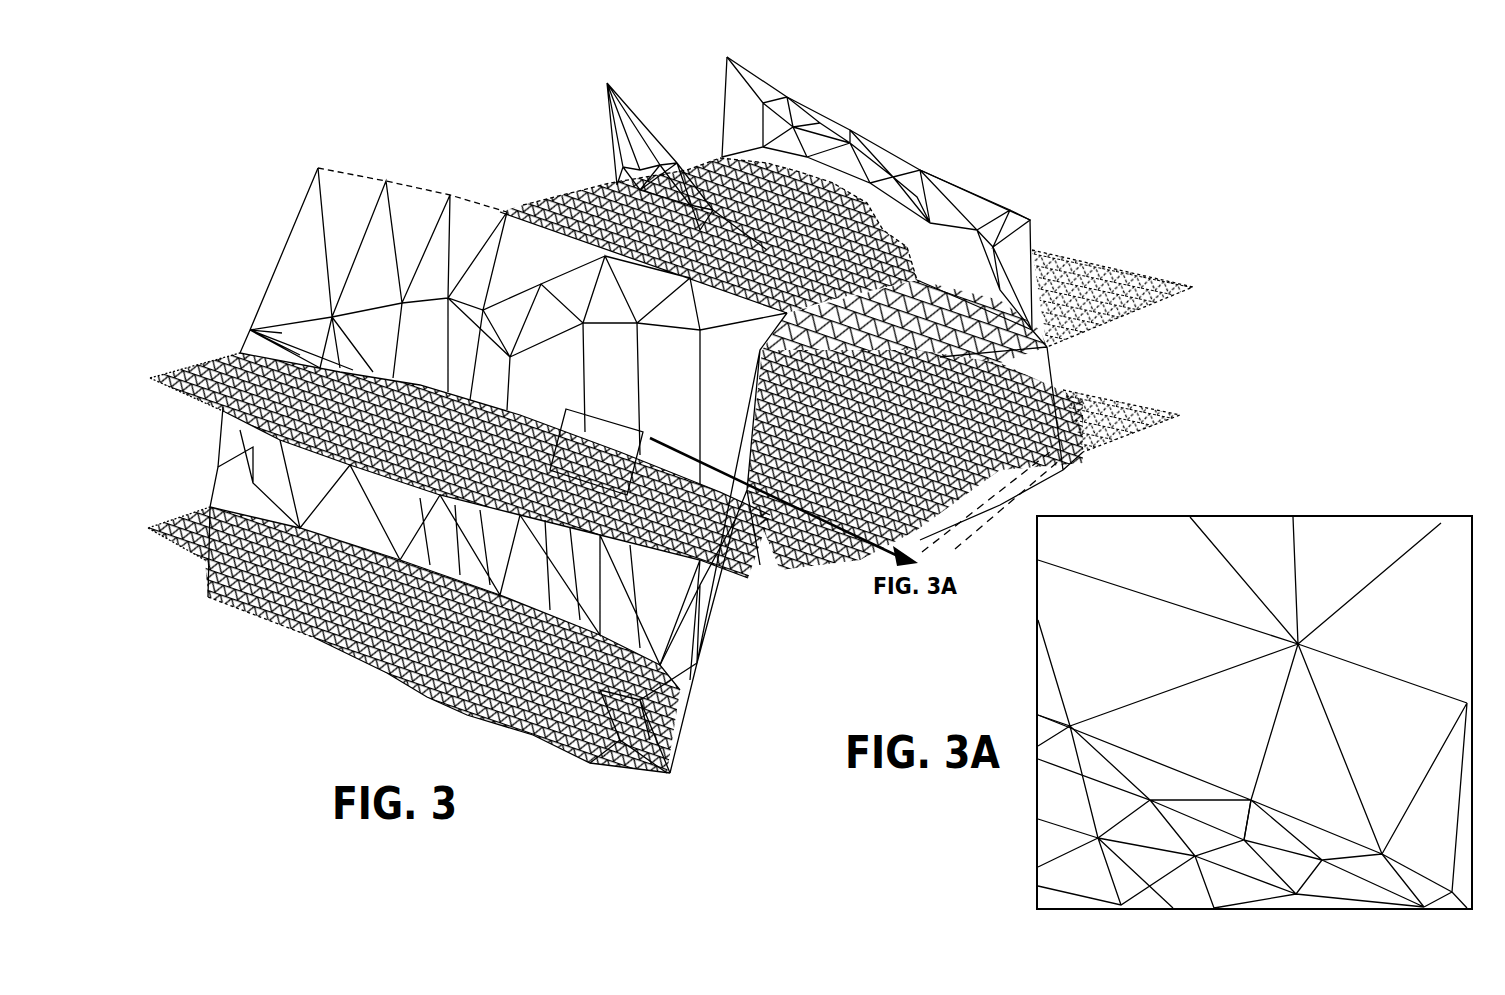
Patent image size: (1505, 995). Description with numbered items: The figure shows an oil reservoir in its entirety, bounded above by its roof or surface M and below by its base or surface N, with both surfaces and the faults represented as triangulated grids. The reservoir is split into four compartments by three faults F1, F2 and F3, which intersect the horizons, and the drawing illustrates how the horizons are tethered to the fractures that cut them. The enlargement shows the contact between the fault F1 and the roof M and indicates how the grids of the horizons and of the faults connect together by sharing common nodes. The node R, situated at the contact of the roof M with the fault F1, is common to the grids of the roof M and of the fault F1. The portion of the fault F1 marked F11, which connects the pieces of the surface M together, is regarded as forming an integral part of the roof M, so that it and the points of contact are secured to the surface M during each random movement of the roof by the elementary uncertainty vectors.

In FIG. 3, the fault F1 is at (497, 454).
In FIG. 3A, the fault F1 is at (1362, 538).
In FIG. 3, the fault F2 is at (680, 152).
In FIG. 3, the fault F3 is at (877, 184).
In FIG. 3, the portion of the fault F1 F11 is at (276, 269).
In FIG. 3A, the portion of the fault F1 F11 is at (1451, 859).
In FIG. 3, the roof M is at (671, 414).
In FIG. 3A, the roof M is at (1032, 843).
In FIG. 3, the base N is at (664, 581).
In FIG. 3A, the node R is at (1256, 798).